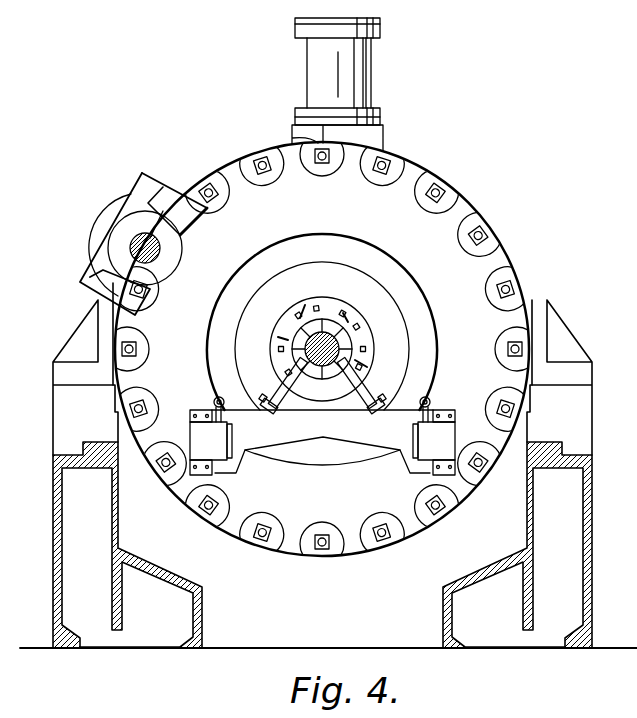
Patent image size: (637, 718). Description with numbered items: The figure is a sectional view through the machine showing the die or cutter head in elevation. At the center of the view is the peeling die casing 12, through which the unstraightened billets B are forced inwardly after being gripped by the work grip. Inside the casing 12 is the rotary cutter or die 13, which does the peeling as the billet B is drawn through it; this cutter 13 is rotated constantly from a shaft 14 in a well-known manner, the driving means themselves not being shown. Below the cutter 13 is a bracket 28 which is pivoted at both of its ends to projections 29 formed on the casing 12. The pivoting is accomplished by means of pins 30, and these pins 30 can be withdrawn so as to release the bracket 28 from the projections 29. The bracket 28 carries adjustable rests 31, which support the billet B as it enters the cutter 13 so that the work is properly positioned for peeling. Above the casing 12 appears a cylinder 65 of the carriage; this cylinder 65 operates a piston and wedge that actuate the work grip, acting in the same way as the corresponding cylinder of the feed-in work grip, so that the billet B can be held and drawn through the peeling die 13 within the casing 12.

The peeling die casing 12 is at (449, 258).
The rotary cutter or die 13 is at (322, 296).
The shaft 14 is at (152, 259).
The bracket 28 is at (253, 445).
The projections 29 is at (218, 437).
The pins 30 is at (214, 400).
The adjustable rests 31 is at (368, 373).
The cylinder 65 is at (364, 72).
The unstraightened billets B is at (357, 330).